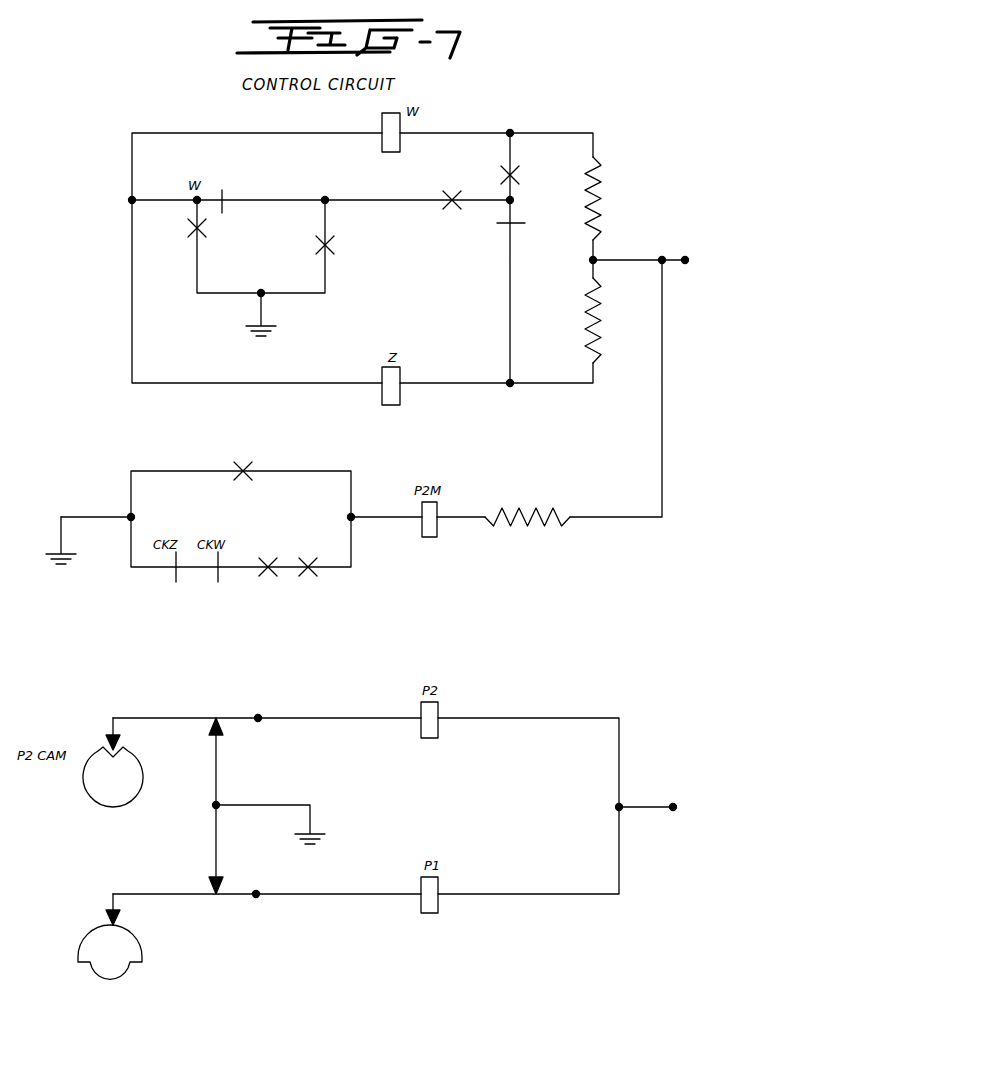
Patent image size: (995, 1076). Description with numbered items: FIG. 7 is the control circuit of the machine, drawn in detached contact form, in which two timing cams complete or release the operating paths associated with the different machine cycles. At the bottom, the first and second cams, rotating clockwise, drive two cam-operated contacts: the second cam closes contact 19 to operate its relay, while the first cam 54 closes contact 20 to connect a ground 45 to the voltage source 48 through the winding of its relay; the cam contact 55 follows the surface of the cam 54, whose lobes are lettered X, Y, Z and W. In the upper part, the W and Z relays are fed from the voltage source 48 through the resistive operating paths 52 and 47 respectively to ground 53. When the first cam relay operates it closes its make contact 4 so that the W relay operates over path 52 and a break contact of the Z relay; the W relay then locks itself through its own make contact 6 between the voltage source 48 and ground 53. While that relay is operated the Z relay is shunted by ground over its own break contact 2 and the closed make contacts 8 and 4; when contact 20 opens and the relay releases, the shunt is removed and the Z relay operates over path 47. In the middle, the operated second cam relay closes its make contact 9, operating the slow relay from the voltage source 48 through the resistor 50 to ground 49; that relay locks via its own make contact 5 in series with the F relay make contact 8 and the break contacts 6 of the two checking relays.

The 2BZ contact 2 is at (513, 209).
The 4MP1 contact 4 is at (332, 237).
The 5MP2M contact 5 is at (309, 567).
The 6MW, 6BCKZ and 6BCKW contacts 6 is at (202, 396).
The 8MP1 and 8MF contacts 8 is at (365, 383).
The 9MP2 contact 9 is at (237, 467).
The contact 19 is at (220, 716).
The contact 20 is at (222, 890).
The ground 45 is at (312, 826).
The operating path 47 is at (604, 327).
The voltage source 48 is at (688, 256).
The ground 49 is at (58, 538).
The resistor 50 is at (523, 513).
The operating path 52 is at (604, 203).
The ground 53 is at (278, 316).
The P1 cam 54 is at (96, 979).
The cam contact 55 is at (122, 929).